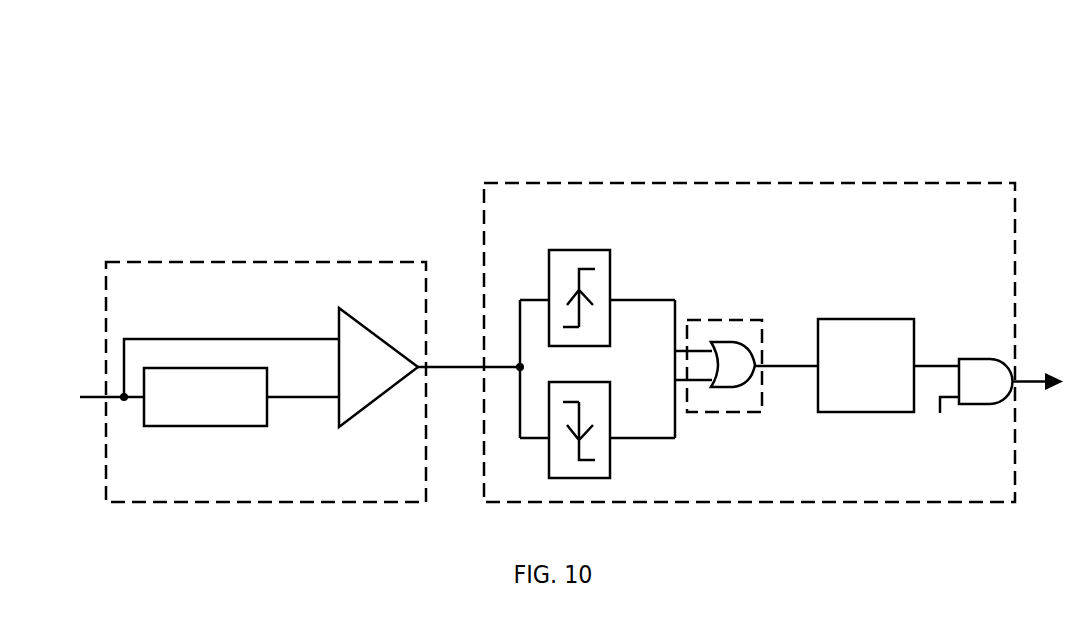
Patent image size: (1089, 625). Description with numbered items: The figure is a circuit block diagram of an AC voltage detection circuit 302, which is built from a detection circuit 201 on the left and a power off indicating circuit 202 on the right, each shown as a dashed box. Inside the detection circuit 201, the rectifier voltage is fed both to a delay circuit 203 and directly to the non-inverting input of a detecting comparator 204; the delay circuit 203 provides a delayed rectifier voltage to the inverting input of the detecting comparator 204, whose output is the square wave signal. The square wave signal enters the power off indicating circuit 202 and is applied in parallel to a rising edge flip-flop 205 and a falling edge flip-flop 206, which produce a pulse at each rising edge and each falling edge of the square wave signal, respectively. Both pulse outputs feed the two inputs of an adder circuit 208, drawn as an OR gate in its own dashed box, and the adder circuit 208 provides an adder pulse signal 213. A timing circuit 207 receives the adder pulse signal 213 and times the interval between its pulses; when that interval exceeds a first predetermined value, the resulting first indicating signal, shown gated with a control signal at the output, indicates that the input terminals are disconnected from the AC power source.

The AC voltage detection circuit 302 is at (832, 92).
The detection circuit 201 is at (228, 262).
The power off indicating circuit 202 is at (484, 240).
The delay circuit 203 is at (212, 427).
The detecting comparator 204 is at (375, 330).
The rising edge flip-flop 205 is at (575, 243).
The falling edge flip-flop 206 is at (549, 465).
The timing circuit 207 is at (867, 319).
The adder circuit 208 is at (715, 413).
The adder pulse signal 213 is at (786, 352).